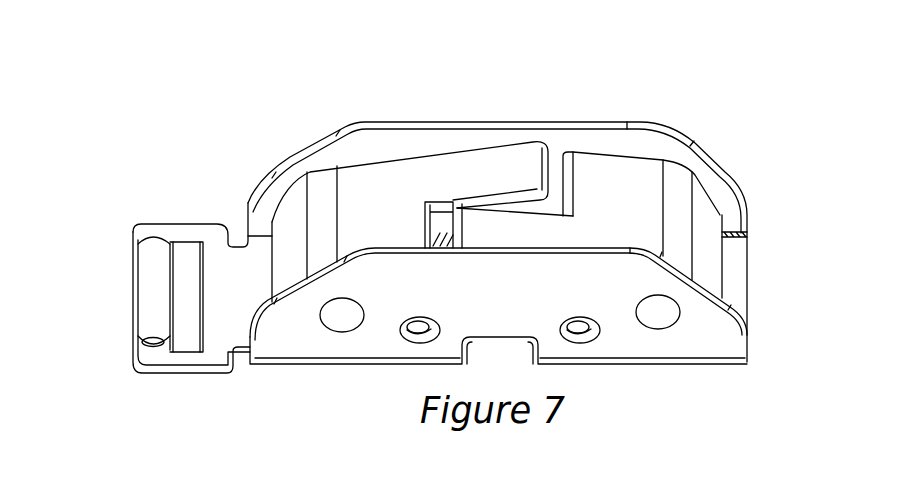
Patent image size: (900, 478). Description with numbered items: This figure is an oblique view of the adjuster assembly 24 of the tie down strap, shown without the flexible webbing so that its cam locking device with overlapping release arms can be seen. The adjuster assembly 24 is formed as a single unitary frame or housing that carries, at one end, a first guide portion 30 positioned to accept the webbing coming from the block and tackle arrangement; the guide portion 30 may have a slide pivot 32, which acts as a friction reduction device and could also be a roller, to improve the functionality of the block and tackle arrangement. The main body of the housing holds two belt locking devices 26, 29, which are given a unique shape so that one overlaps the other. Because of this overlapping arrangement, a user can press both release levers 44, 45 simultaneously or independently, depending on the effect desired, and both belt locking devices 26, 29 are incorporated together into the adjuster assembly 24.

The adjuster assembly 24 is at (479, 221).
The belt locking device 26 is at (368, 190).
The belt locking device 29 is at (635, 182).
The first guide portion 30 is at (190, 265).
The slide pivot 32 is at (152, 282).
The release lever 44 is at (472, 167).
The release lever 45 is at (497, 227).